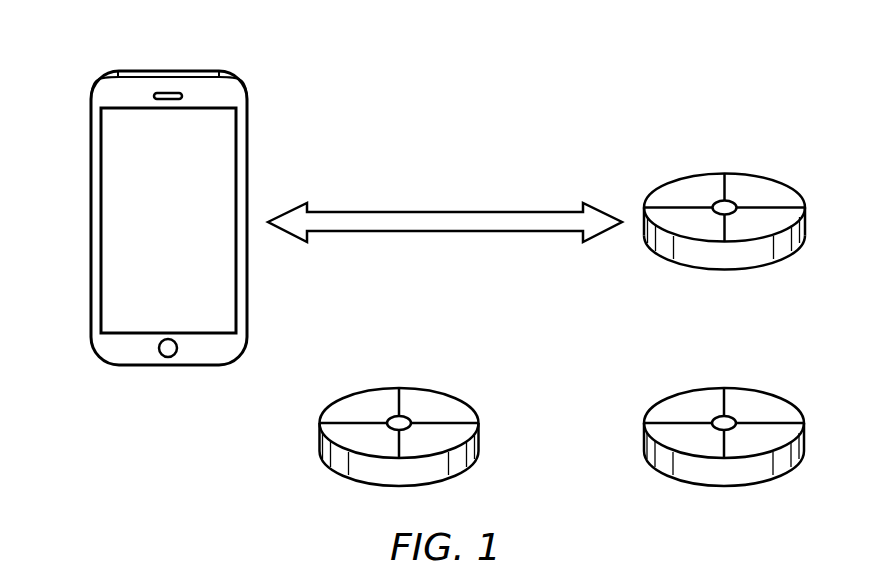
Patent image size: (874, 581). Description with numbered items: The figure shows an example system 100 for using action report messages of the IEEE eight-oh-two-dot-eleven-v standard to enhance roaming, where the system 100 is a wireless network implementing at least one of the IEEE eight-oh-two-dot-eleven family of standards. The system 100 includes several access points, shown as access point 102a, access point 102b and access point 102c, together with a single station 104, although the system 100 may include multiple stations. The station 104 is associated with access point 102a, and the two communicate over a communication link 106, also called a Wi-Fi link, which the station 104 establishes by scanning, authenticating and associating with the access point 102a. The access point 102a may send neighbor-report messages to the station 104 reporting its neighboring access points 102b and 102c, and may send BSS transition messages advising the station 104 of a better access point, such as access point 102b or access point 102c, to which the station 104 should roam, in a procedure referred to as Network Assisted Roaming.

The system 100 is at (627, 34).
The access point 102a is at (780, 182).
The access point 102b is at (780, 396).
The access point 102c is at (455, 396).
The station 104 is at (91, 146).
The communication link 106 is at (432, 231).